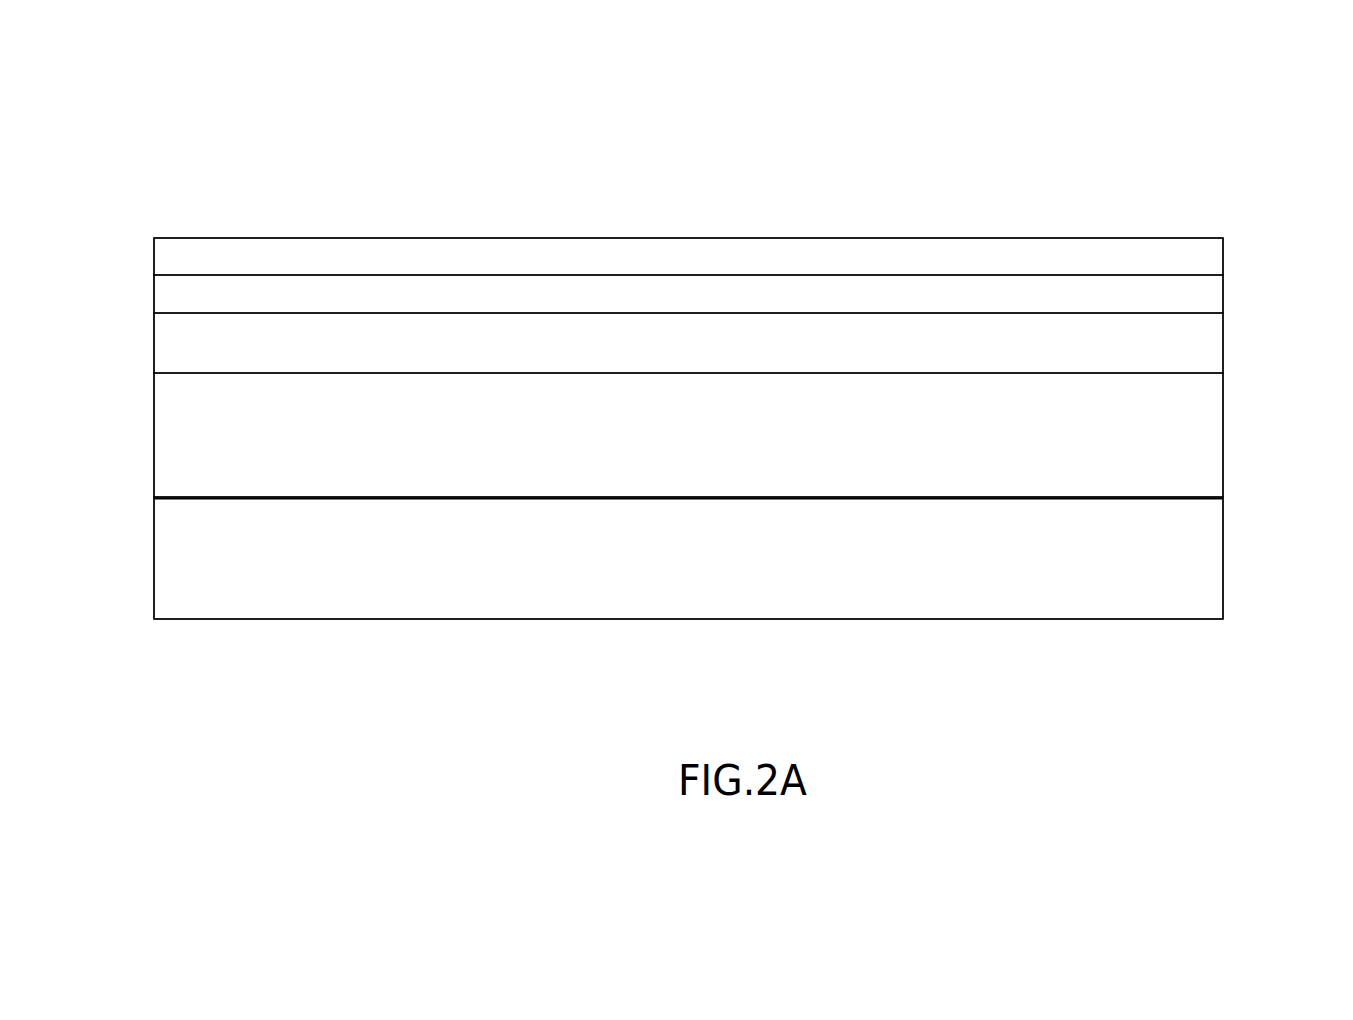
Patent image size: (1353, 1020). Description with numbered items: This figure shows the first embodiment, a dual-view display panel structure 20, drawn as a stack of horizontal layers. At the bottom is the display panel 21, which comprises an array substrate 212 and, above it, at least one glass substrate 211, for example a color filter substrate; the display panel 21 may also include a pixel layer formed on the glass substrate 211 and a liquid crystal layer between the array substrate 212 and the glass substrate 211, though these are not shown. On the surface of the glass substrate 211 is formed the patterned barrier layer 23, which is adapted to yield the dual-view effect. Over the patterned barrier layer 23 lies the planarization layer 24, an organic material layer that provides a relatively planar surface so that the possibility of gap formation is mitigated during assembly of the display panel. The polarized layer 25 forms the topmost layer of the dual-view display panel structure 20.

The dual-view display panel structure 20 is at (106, 165).
The display panel 21 is at (125, 400).
The glass substrate 211 is at (1222, 436).
The array substrate 212 is at (1222, 563).
The patterned barrier layer 23 is at (1223, 347).
The planarization layer 24 is at (1223, 297).
The polarized layer 25 is at (1223, 258).